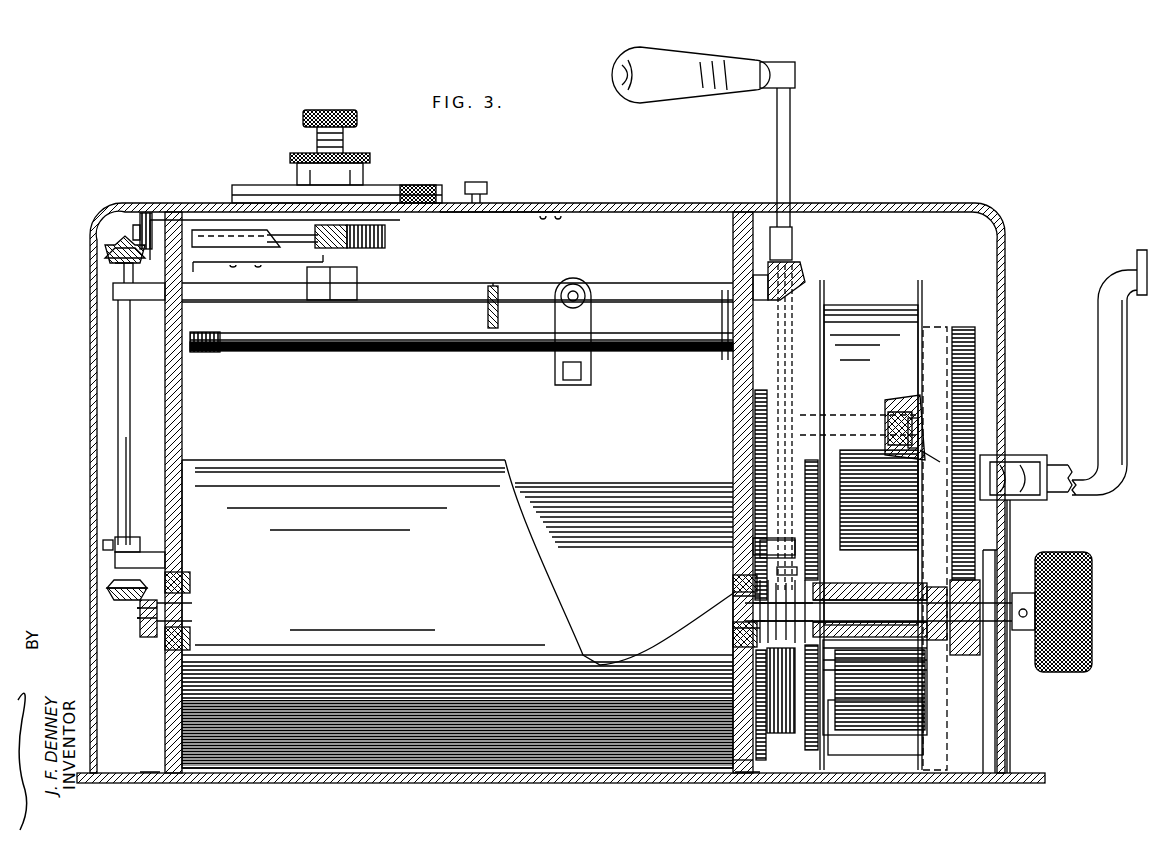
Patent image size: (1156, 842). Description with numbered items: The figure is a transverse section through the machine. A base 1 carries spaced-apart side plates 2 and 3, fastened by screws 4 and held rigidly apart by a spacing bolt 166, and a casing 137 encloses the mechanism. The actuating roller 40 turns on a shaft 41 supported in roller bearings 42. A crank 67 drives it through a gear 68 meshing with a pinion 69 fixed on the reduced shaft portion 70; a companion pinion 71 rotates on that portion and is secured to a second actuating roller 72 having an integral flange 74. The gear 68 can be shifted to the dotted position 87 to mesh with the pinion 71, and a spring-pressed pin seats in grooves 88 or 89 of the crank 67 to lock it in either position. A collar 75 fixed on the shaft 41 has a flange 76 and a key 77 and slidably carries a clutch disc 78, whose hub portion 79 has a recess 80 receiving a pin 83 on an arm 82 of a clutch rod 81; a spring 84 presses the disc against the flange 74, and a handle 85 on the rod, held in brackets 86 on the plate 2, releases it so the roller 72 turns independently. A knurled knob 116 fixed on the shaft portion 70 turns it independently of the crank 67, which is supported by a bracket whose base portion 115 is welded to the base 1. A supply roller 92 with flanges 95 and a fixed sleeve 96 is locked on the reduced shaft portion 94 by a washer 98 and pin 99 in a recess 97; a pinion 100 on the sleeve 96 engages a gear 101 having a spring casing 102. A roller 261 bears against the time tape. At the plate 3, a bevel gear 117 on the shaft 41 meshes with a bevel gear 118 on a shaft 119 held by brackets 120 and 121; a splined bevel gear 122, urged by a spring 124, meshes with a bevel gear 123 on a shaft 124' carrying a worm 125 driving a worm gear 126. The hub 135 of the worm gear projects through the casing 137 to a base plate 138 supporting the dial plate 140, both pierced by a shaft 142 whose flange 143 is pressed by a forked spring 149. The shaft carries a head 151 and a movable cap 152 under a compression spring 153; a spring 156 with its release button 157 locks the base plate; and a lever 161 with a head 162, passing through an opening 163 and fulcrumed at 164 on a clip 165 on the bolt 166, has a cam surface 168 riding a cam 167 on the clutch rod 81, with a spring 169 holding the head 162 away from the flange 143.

The base 1 is at (115, 784).
The side plate 2 is at (735, 784).
The side plate 3 is at (165, 690).
The screws 4 is at (160, 784).
The actuating roller 40 is at (352, 468).
The shaft 41 is at (190, 612).
The roller bearings 42 is at (190, 585).
The crank 67 is at (1096, 362).
The gear 68 is at (965, 327).
The pinion 69 is at (962, 645).
The reduced portion 70 is at (1000, 600).
The companion pinion 71 is at (935, 587).
The second actuating roller 72 is at (930, 675).
The flange 74 is at (836, 455).
The collar 75 is at (748, 628).
The flange 76 is at (762, 618).
The key 77 is at (760, 548).
The clutch disc 78 is at (808, 460).
The hub portion 79 is at (800, 578).
The recess 80 is at (815, 590).
The clutch rod 81 is at (792, 345).
The arm 82 is at (800, 568).
The pin 83 is at (900, 590).
The spring 84 is at (760, 605).
The handle 85 is at (690, 100).
The brackets 86 is at (792, 245).
The dotted line position 87 is at (935, 327).
The groove 88 is at (1030, 462).
The groove 89 is at (1005, 470).
The supply roller 92 is at (866, 310).
The reduced extended portion 94 is at (895, 415).
The flanges 95 is at (824, 285).
The sleeve 96 is at (835, 418).
The recess 97 is at (915, 400).
The washer 98 is at (918, 425).
The pin 99 is at (922, 440).
The pinion 100 is at (768, 400).
The gear 101 is at (755, 470).
The casing 102 is at (785, 735).
The base portion 115 is at (1000, 690).
The knurled knob 116 is at (1090, 555).
The bevel gear 117 is at (148, 637).
The companion bevel gear 118 is at (107, 590).
The shaft 119 is at (118, 412).
The bracket 120 is at (115, 560).
The bracket 121 is at (113, 292).
The bevel gear 122 is at (110, 252).
The bevel gear 123 is at (146, 213).
The spring 124 is at (93, 260).
The shaft 124' is at (115, 209).
The worm 125 is at (350, 252).
The worm gear 126 is at (390, 238).
The hub 135 is at (390, 230).
The casing 137 is at (640, 203).
The base plate 138 is at (430, 190).
The dial plate 140 is at (410, 188).
The shaft 142 is at (360, 155).
The flange portion 143 is at (348, 250).
The spring 149 is at (283, 262).
The head 151 is at (340, 110).
The movable cap 152 is at (363, 175).
The compression spring 153 is at (345, 135).
The spring 156 is at (490, 212).
The button 157 is at (482, 182).
The lever 161 is at (474, 295).
The head 162 is at (315, 290).
The opening 163 is at (722, 322).
The fulcrum 164 is at (585, 288).
The clip 165 is at (592, 322).
The spacing bolt 166 is at (525, 352).
The cam 167 is at (753, 282).
The cam surface 168 is at (803, 280).
The spring 169 is at (488, 318).
The roller 261 is at (930, 714).